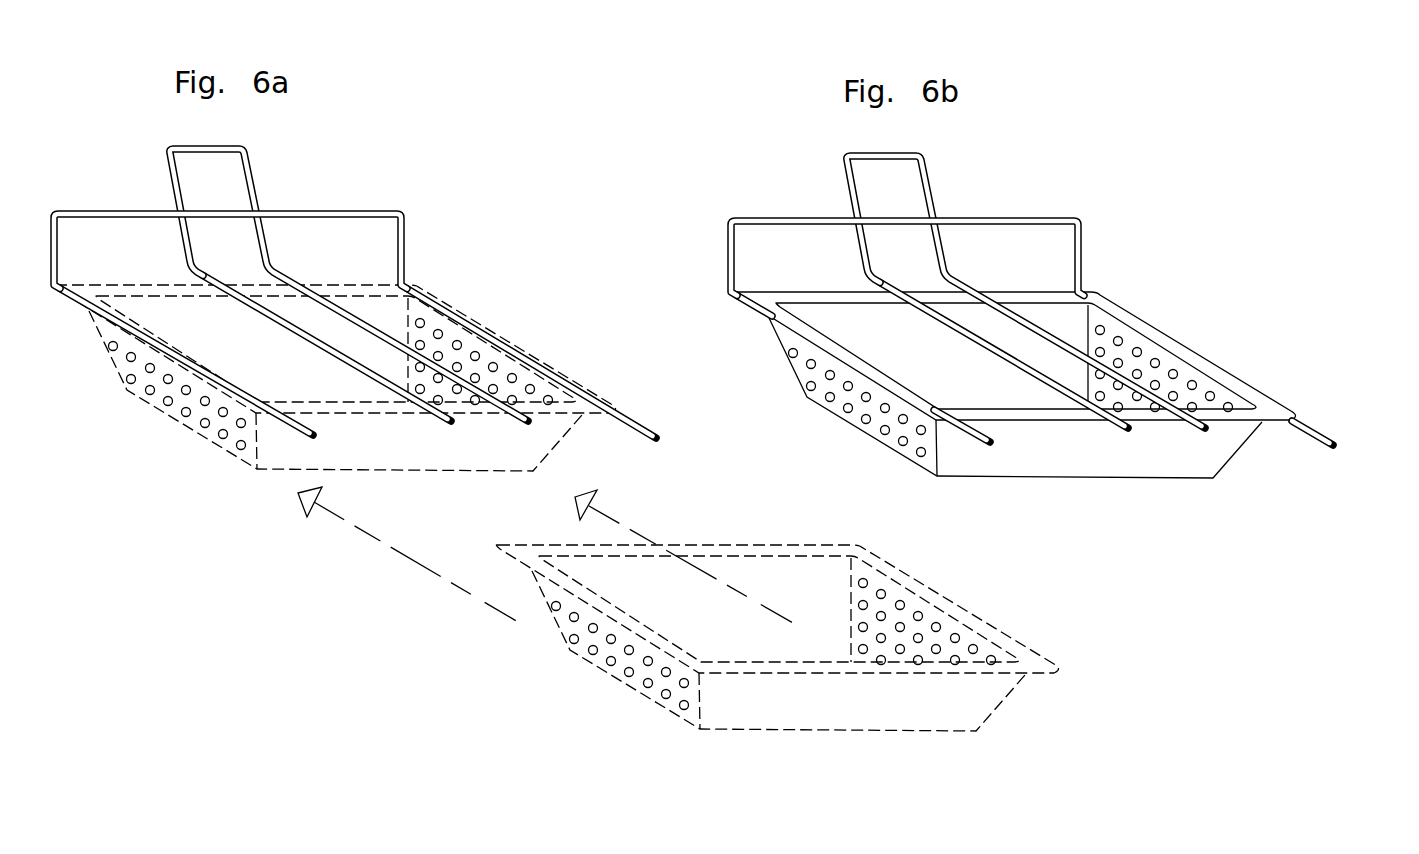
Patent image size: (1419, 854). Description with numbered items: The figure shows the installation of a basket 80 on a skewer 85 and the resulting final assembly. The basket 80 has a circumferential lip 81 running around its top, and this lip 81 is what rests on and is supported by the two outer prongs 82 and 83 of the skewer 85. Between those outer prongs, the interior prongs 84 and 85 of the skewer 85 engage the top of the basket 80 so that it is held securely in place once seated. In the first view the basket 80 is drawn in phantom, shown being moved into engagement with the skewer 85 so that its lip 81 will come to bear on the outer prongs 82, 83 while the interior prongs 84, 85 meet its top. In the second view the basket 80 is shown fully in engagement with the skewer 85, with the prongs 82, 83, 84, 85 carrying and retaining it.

In FIG. 6a, the basket 80 is at (457, 307).
In FIG. 6b, the basket 80 is at (792, 340).
In FIG. 6a, the circumferential lip 81 is at (588, 417).
In FIG. 6b, the circumferential lip 81 is at (1033, 415).
In FIG. 6a, the outer prong 82 is at (300, 430).
In FIG. 6b, the outer prong 82 is at (978, 439).
In FIG. 6a, the outer prong 83 is at (574, 384).
In FIG. 6b, the outer prong 83 is at (1323, 441).
In FIG. 6a, the interior prong 84 is at (448, 421).
In FIG. 6b, the interior prong 84 is at (1124, 427).
In FIG. 6a, the skewer 85 is at (331, 210).
In FIG. 6b, the skewer 85 is at (1005, 215).